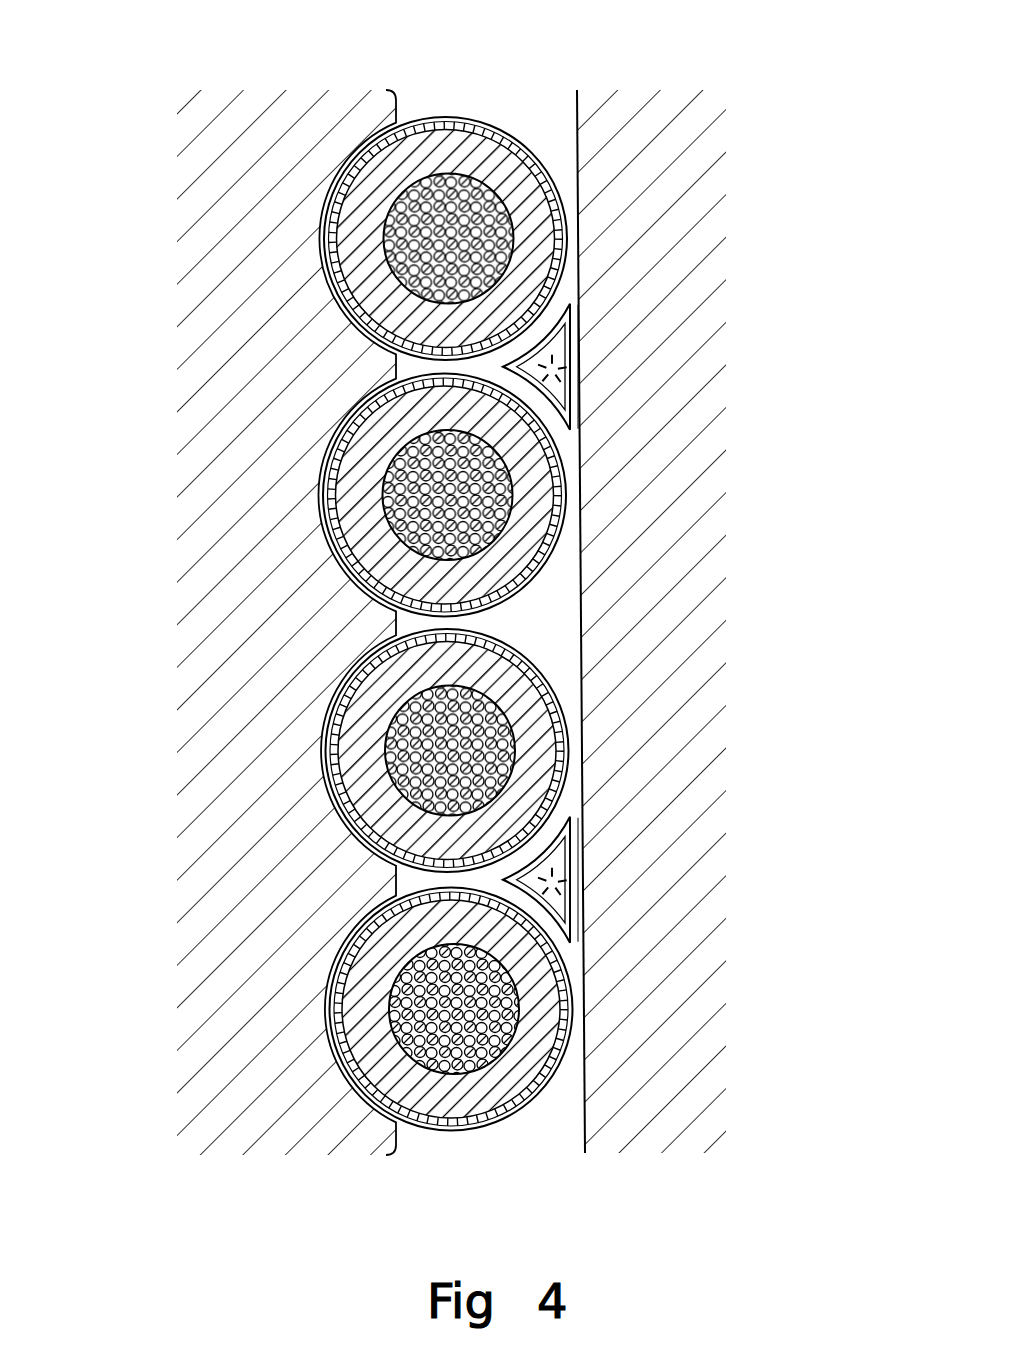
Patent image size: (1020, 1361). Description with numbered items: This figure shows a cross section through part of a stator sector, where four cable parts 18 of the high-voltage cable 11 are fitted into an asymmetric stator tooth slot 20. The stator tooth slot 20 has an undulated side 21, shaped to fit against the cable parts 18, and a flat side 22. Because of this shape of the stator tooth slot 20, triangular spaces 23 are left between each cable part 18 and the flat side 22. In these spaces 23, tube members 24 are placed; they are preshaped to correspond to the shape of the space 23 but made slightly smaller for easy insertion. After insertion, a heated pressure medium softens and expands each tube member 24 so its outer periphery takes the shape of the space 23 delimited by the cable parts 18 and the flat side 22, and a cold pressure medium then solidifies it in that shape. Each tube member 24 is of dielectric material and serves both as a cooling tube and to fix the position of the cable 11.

The high-voltage cable 11 is at (329, 568).
The cable parts 18 is at (325, 568).
The stator tooth slot 20 is at (552, 1140).
The undulated side 21 is at (355, 148).
The flat side 22 is at (583, 188).
The triangular spaces 23 is at (552, 621).
The tube members 24 is at (572, 390).